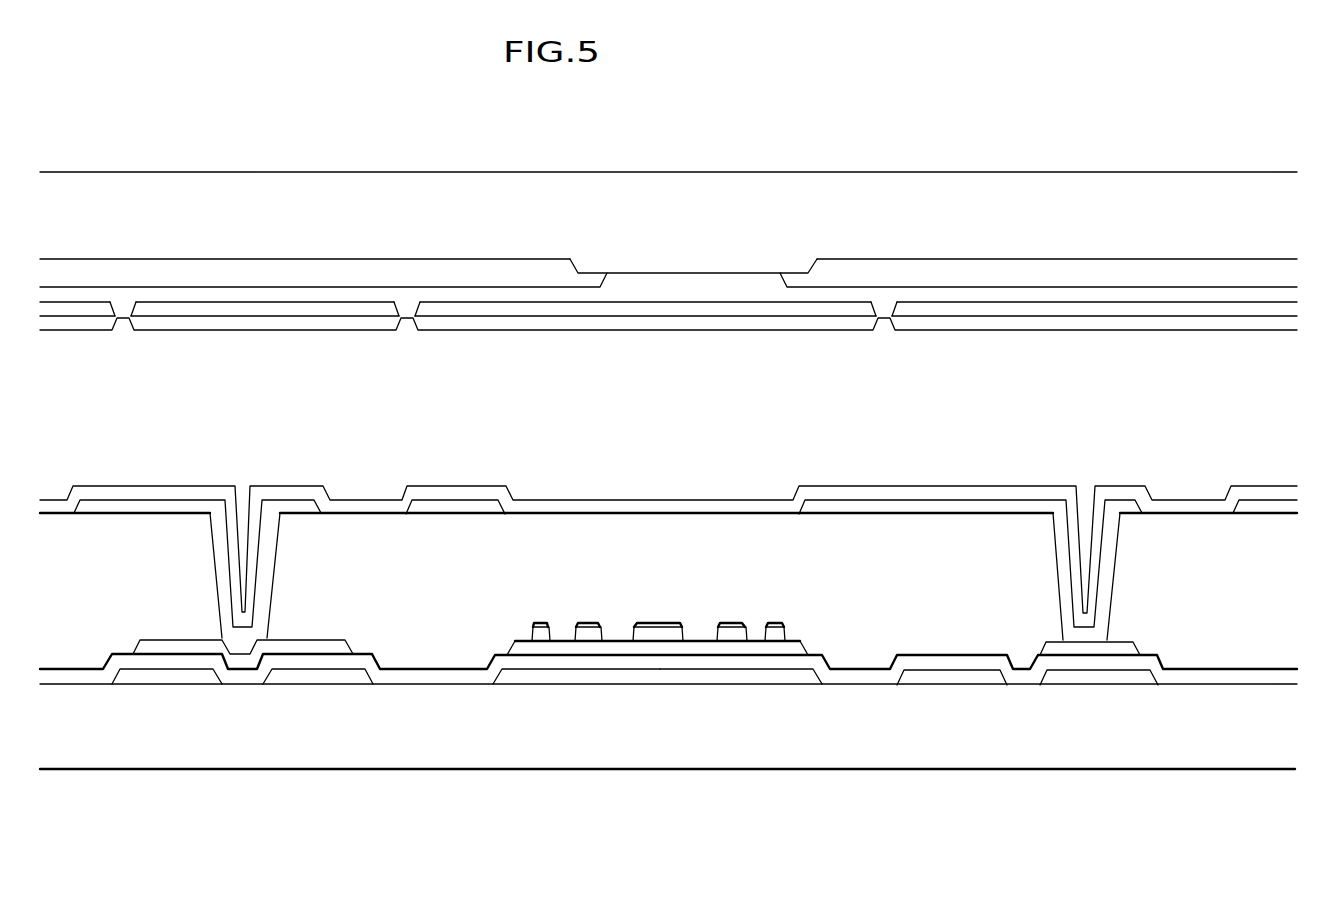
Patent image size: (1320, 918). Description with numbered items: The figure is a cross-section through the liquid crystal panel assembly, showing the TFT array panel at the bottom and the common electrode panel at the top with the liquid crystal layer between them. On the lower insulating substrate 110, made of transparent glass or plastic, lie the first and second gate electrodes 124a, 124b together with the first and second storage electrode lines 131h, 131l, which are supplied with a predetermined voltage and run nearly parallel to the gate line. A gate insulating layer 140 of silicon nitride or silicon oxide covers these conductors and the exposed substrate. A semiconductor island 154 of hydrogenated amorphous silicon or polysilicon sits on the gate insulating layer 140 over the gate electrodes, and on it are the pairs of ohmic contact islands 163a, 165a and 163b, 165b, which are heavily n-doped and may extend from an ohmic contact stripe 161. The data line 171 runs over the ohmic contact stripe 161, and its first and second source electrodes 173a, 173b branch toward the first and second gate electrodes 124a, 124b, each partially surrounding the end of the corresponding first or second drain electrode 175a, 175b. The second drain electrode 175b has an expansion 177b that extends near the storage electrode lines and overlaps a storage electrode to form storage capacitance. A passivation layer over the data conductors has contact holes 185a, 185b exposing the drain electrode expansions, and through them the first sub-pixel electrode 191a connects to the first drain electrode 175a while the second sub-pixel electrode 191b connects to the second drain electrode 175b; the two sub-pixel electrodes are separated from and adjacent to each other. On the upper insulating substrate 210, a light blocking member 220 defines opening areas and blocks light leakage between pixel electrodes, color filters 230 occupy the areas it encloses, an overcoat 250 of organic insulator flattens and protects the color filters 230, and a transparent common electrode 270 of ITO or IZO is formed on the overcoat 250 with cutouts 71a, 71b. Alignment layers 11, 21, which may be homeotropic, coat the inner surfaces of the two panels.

The alignment layer 11 is at (83, 490).
The alignment layer 21 is at (276, 322).
The cutout 71a is at (405, 310).
The cutout 71b is at (120, 310).
The insulating substrate 110 is at (247, 748).
The first gate electrode 124a is at (777, 677).
The second gate electrode 124b is at (588, 677).
The first storage electrode line 131h is at (147, 676).
The second storage electrode line 131l is at (312, 676).
The gate insulating layer 140 is at (400, 676).
The semiconductor island 154 is at (687, 650).
The ohmic contact stripe 161 is at (650, 643).
The ohmic contact island 163a is at (772, 641).
The ohmic contact island 163b is at (540, 634).
The ohmic contact island 165a is at (745, 638).
The ohmic contact island 165b is at (597, 642).
The data line 171 is at (673, 632).
The first source electrode 173a is at (790, 627).
The second source electrode 173b is at (540, 613).
The first drain electrode 175a is at (730, 633).
The second drain electrode 175b is at (600, 629).
The expansion 177b is at (183, 647).
The contact hole 185a is at (1087, 612).
The contact hole 185b is at (243, 612).
The first sub-pixel electrode 191a is at (427, 503).
The second sub-pixel electrode 191b is at (158, 503).
The insulating substrate 210 is at (893, 210).
The light blocking member 220 is at (751, 270).
The color filter 230 is at (965, 272).
The overcoat 250 is at (1063, 296).
The common electrode 270 is at (668, 308).